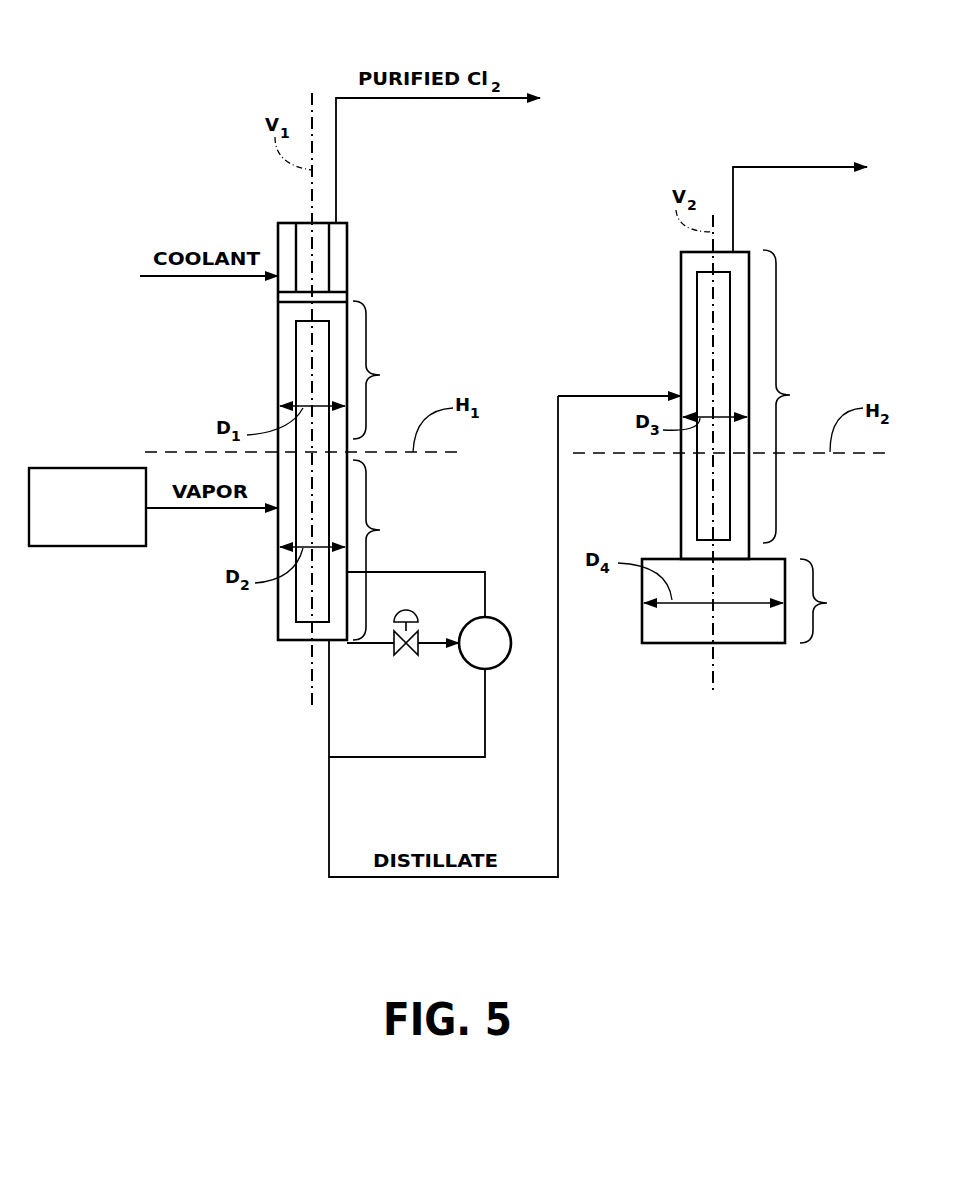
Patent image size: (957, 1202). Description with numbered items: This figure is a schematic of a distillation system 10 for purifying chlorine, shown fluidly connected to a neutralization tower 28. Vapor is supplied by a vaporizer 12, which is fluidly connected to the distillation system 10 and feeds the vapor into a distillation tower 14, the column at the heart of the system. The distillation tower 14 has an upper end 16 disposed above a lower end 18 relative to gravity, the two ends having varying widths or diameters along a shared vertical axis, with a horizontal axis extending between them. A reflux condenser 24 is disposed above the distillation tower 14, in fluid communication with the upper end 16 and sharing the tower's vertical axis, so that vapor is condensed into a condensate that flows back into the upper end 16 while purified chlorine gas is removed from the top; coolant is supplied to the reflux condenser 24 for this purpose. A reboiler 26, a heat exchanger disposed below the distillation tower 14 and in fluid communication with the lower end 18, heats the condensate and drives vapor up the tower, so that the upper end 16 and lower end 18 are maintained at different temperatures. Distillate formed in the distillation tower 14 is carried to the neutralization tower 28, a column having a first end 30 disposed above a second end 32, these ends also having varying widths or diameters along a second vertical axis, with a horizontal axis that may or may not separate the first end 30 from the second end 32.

The distillation system 10 is at (136, 354).
The vaporizer 12 is at (105, 535).
The distillation tower 14 is at (278, 377).
The upper end 16 is at (381, 370).
The lower end 18 is at (381, 550).
The reflux condenser 24 is at (347, 270).
The reboiler 26 is at (512, 643).
The neutralization tower 28 is at (681, 370).
The first end 30 is at (794, 396).
The second end 32 is at (752, 601).